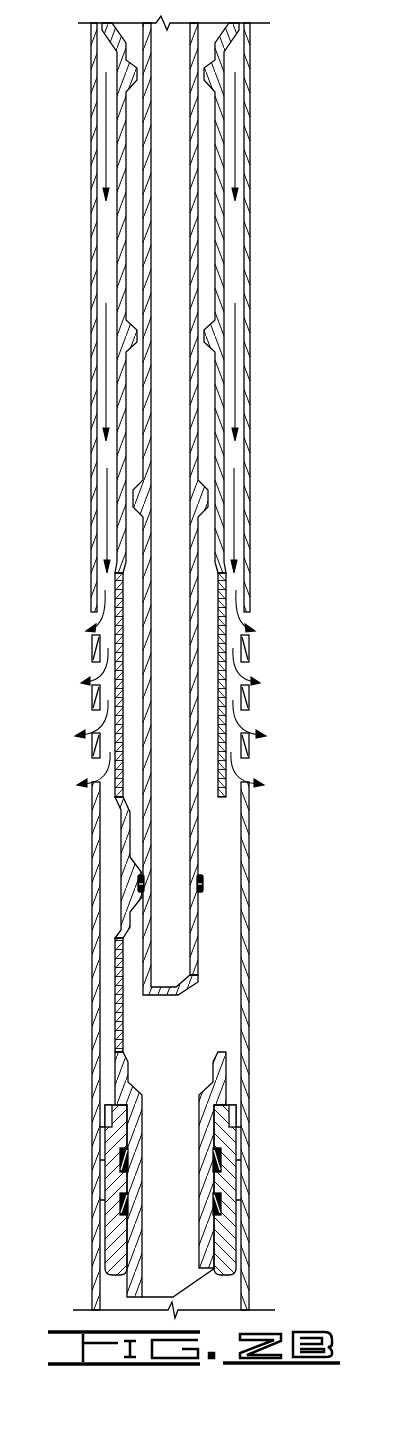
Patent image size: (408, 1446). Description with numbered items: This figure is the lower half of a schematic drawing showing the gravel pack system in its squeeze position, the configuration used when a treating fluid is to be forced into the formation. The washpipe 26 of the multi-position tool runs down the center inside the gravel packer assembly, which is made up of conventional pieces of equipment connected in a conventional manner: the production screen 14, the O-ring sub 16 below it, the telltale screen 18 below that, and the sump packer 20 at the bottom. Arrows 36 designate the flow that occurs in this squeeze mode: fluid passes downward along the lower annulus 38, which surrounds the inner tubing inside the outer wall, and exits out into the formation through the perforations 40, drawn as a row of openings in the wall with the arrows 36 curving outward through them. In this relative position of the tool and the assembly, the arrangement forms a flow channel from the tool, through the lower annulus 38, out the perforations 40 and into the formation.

The production screen 14 is at (233, 598).
The O-ring sub 16 is at (228, 887).
The telltale screen 18 is at (233, 997).
The sump packer 20 is at (245, 1131).
The washpipe 26 is at (197, 46).
The arrows 36 is at (108, 388).
The lower annulus 38 is at (232, 249).
The perforations 40 is at (243, 802).